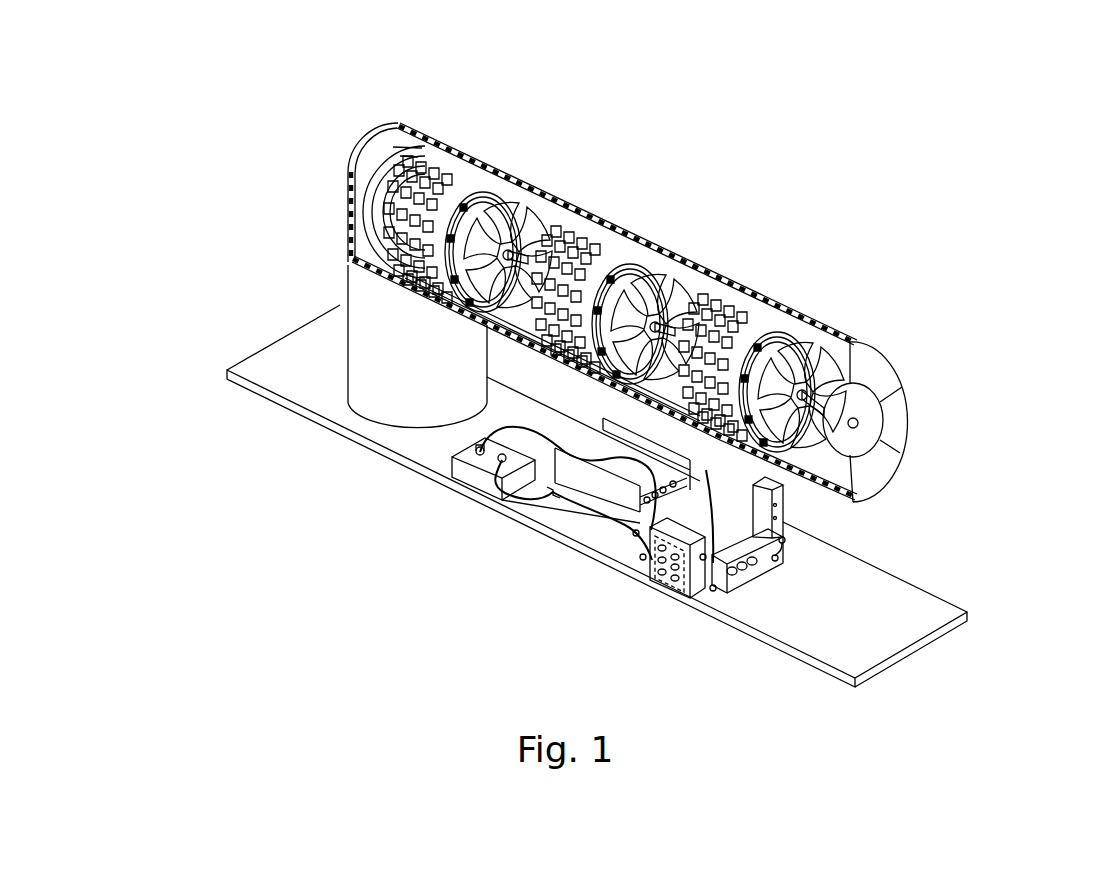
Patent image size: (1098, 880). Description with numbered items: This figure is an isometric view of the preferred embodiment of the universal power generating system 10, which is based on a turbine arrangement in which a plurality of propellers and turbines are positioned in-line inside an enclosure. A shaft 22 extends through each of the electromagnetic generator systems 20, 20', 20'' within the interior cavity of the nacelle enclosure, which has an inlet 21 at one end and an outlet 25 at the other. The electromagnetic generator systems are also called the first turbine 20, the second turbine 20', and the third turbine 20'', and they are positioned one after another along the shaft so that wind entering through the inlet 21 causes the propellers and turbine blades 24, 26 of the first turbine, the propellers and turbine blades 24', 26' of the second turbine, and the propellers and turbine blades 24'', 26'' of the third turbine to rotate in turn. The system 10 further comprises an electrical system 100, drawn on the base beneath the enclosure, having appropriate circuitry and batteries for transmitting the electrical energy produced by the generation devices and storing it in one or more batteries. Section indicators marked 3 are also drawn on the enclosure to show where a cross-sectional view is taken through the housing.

The universal power generating system 10 is at (1023, 67).
The electrical system 100 is at (824, 543).
The section line for FIG. 3 is at (698, 290).
The shaft 22 is at (878, 352).
The inlet 21 is at (880, 386).
The outlet 25 is at (400, 153).
The first turbine 20 is at (791, 324).
The propellers 24 is at (821, 370).
The turbine blades 26 is at (730, 336).
The second turbine 20' is at (635, 247).
The propellers 24' is at (650, 278).
The turbine blades 26' is at (585, 258).
The third turbine 20'' is at (488, 181).
The propellers 24'' is at (528, 212).
The turbine blades 26'' is at (474, 194).